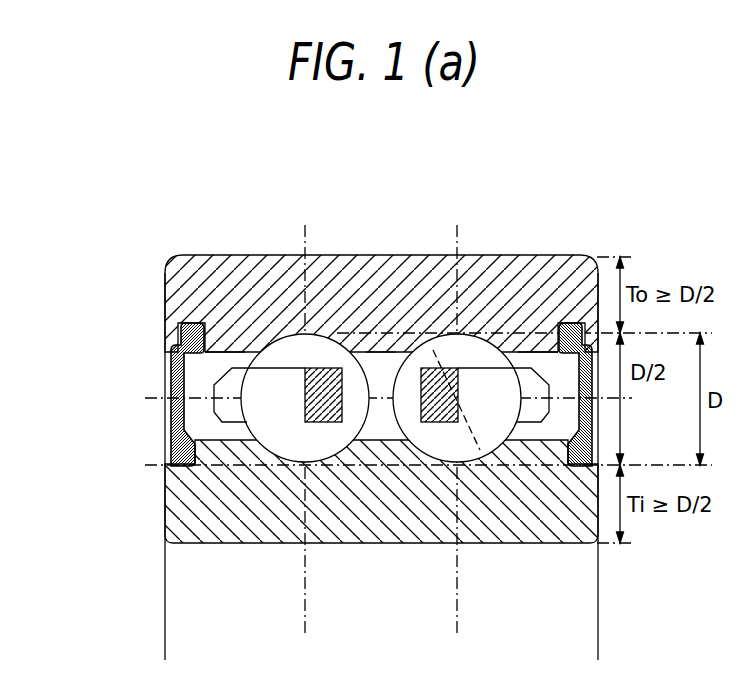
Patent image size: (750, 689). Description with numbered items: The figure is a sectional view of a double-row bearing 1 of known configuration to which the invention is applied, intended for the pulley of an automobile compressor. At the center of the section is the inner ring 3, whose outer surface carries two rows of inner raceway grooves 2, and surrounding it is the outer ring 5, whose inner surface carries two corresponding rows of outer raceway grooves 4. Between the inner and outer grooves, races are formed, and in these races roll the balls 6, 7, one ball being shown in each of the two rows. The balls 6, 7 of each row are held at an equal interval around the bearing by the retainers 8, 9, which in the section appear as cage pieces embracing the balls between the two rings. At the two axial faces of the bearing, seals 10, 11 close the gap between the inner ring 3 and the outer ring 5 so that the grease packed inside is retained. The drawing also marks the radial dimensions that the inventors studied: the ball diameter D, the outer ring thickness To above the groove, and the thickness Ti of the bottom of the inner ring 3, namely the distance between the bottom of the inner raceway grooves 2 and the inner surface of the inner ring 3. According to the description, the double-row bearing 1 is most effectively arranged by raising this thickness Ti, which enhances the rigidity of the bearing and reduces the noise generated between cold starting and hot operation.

The double-row bearing 1 is at (567, 231).
The inner raceway groove 2 is at (368, 445).
The inner ring 3 is at (381, 545).
The outer raceway groove 4 is at (247, 363).
The outer ring 5 is at (363, 266).
The ball 6 is at (441, 348).
The ball 7 is at (262, 356).
The retainer 8 is at (538, 405).
The retainer 9 is at (234, 405).
The seal 10 is at (608, 409).
The seal 11 is at (160, 442).